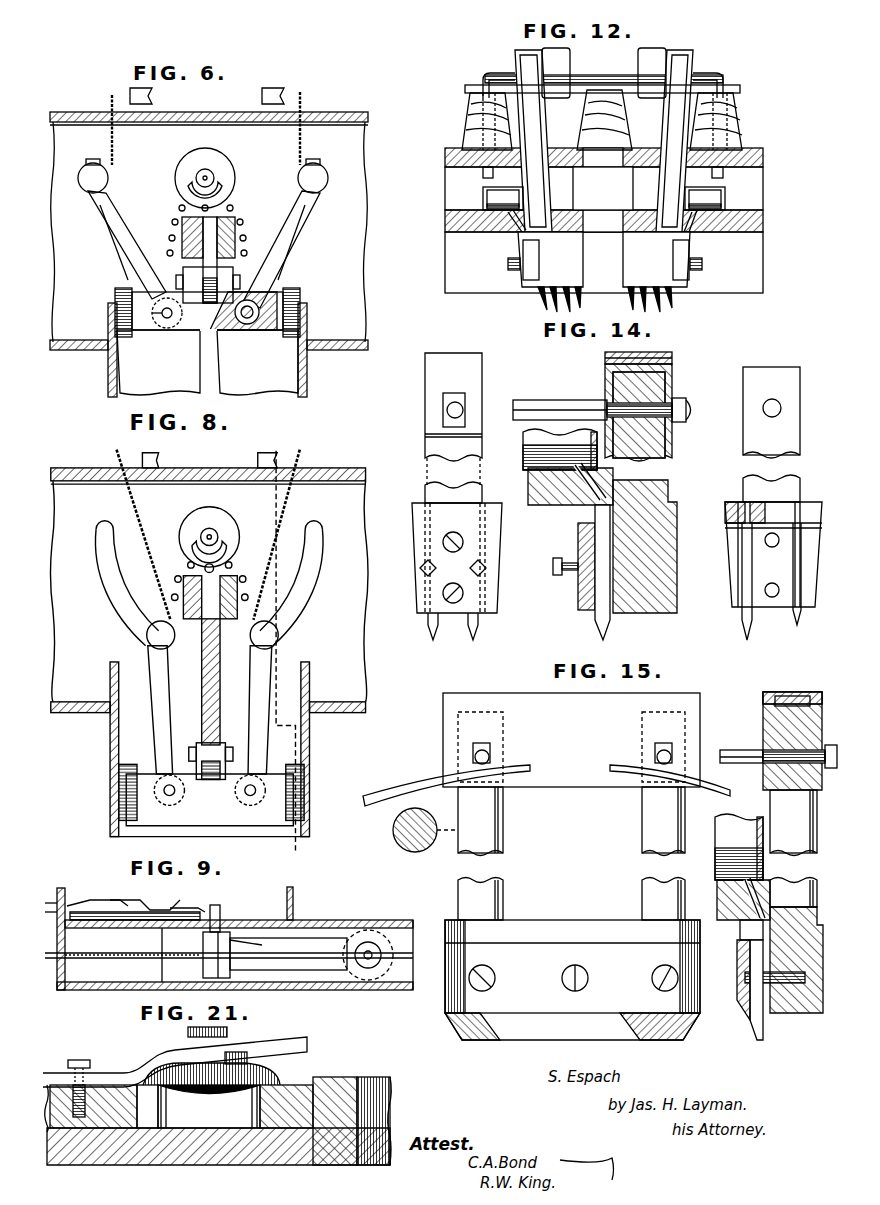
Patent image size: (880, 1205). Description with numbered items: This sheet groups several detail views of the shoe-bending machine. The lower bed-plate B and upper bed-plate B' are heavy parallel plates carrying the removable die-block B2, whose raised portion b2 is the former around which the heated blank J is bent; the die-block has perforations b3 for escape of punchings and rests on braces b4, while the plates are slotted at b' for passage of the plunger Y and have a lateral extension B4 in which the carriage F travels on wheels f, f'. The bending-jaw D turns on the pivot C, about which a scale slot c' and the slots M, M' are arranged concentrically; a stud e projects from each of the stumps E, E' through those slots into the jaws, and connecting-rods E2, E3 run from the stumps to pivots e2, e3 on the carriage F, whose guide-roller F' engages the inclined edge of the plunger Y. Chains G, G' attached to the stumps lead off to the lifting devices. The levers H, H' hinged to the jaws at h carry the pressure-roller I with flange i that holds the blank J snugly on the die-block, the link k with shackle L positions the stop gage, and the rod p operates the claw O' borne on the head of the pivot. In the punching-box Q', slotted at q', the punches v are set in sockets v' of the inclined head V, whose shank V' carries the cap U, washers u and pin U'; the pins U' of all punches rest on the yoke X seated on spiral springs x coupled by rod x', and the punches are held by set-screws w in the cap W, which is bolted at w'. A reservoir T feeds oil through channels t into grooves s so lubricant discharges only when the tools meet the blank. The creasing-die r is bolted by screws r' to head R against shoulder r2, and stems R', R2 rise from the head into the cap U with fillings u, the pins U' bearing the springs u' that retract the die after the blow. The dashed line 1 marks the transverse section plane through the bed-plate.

In FIG. 6, the upper bed-plate B' is at (218, 231).
In FIG. 8, the upper bed-plate B' is at (204, 583).
In FIG. 9, the upper bed-plate B' is at (265, 903).
In FIG. 21, the upper bed-plate B' is at (217, 1135).
In FIG. 9, the lower bed-plate B is at (240, 945).
In FIG. 21, the die-block B2 is at (352, 1132).
In FIG. 6, the lateral extension B4 is at (207, 350).
In FIG. 8, the lateral extension B4 is at (209, 749).
In FIG. 6, the slot in upper bed-plate b' is at (208, 350).
In FIG. 21, the die or former b2 is at (373, 1060).
In FIG. 6, the perforations b3 is at (202, 230).
In FIG. 8, the perforations b3 is at (216, 578).
In FIG. 6, the braces b4 is at (237, 220).
In FIG. 8, the braces b4 is at (212, 615).
In FIG. 9, the braces b4 is at (180, 944).
In FIG. 6, the pivot C is at (205, 178).
In FIG. 8, the pivot C is at (209, 537).
In FIG. 6, the slot concentric with pivot c' is at (217, 171).
In FIG. 8, the slot concentric with pivot c' is at (199, 535).
In FIG. 6, the movable stump E is at (313, 176).
In FIG. 8, the movable stump E is at (270, 635).
In FIG. 9, the movable stump E is at (216, 955).
In FIG. 6, the movable stump E' is at (93, 176).
In FIG. 8, the movable stump E' is at (161, 635).
In FIG. 6, the connecting-rod E2 is at (282, 249).
In FIG. 8, the connecting-rod E2 is at (266, 710).
In FIG. 9, the connecting-rod E2 is at (288, 954).
In FIG. 6, the connecting-rod E3 is at (127, 245).
In FIG. 8, the connecting-rod E3 is at (153, 710).
In FIG. 9, the stud e is at (214, 909).
In FIG. 8, the pivot of connecting-rod e2 is at (259, 790).
In FIG. 6, the pivot of connecting-rod e3 is at (207, 311).
In FIG. 8, the pivot of connecting-rod e3 is at (162, 790).
In FIG. 6, the carriage F is at (243, 320).
In FIG. 8, the carriage F is at (207, 792).
In FIG. 9, the carriage F is at (343, 988).
In FIG. 6, the guide-roller F' is at (214, 260).
In FIG. 8, the guide-roller F' is at (216, 742).
In FIG. 6, the carriage wheel f is at (298, 308).
In FIG. 8, the carriage wheel f is at (307, 792).
In FIG. 9, the carriage wheel f is at (368, 955).
In FIG. 6, the carriage wheel f' is at (116, 308).
In FIG. 8, the carriage wheel f' is at (107, 792).
In FIG. 6, the chain or wire-rope G is at (309, 125).
In FIG. 8, the chain or wire-rope G is at (208, 535).
In FIG. 9, the chain or wire-rope G is at (229, 947).
In FIG. 6, the chain or wire-rope G' is at (104, 127).
In FIG. 6, the lever H is at (265, 94).
In FIG. 9, the lever H is at (49, 922).
In FIG. 6, the lever H' is at (153, 94).
In FIG. 6, the slot M is at (303, 242).
In FIG. 8, the slot M is at (304, 583).
In FIG. 9, the slot M is at (254, 936).
In FIG. 6, the slot M' is at (103, 242).
In FIG. 8, the slot M' is at (118, 583).
In FIG. 8, the plunger Y is at (201, 682).
In FIG. 8, the line 1 1 is at (286, 651).
In FIG. 9, the rod p is at (97, 893).
In FIG. 9, the clamp or claw O' is at (135, 901).
In FIG. 9, the shackle L is at (187, 898).
In FIG. 9, the bending-jaw D is at (234, 898).
In FIG. 21, the bending-jaw D is at (147, 1106).
In FIG. 21, the hinge of lever h is at (93, 1085).
In FIG. 21, the link k is at (181, 1057).
In FIG. 21, the flange of pressure-roller i is at (211, 1074).
In FIG. 21, the pressure-roller I is at (209, 1106).
In FIG. 21, the blank J is at (286, 1096).
In FIG. 12, the punching-box Q' is at (615, 220).
In FIG. 12, the transverse slot of punching-box q' is at (603, 199).
In FIG. 12, the cap U is at (604, 140).
In FIG. 14, the cap U is at (548, 406).
In FIG. 15, the cap U is at (639, 741).
In FIG. 12, the outwardly-projecting pin U' is at (607, 68).
In FIG. 14, the outwardly-projecting pin U' is at (551, 400).
In FIG. 15, the outwardly-projecting pin U' is at (647, 752).
In FIG. 14, the washers or fillings u is at (655, 361).
In FIG. 15, the washers or fillings u is at (792, 682).
In FIG. 15, the spring u' is at (546, 785).
In FIG. 12, the yoke X is at (601, 89).
In FIG. 12, the spiral spring x is at (603, 120).
In FIG. 12, the rod x' is at (604, 69).
In FIG. 12, the reservoir T is at (590, 188).
In FIG. 14, the reservoir T is at (550, 449).
In FIG. 15, the reservoir T is at (739, 847).
In FIG. 12, the channel t is at (508, 222).
In FIG. 14, the channel t is at (585, 488).
In FIG. 15, the channel t is at (746, 908).
In FIG. 12, the head of punches V is at (604, 259).
In FIG. 14, the head of punches V is at (617, 546).
In FIG. 12, the shank V' is at (560, 189).
In FIG. 14, the shank V' is at (612, 435).
In FIG. 12, the punch v is at (600, 301).
In FIG. 14, the punch v is at (614, 581).
In FIG. 12, the socket v' is at (651, 125).
In FIG. 12, the retaining-cap W is at (510, 275).
In FIG. 14, the retaining-cap W is at (523, 566).
In FIG. 12, the set-screw w is at (704, 265).
In FIG. 14, the set-screw w is at (499, 554).
In FIG. 14, the bolts w' is at (485, 599).
In FIG. 14, the oil-groove s is at (596, 615).
In FIG. 15, the oil-groove s is at (759, 991).
In FIG. 15, the head R is at (641, 972).
In FIG. 15, the stem R' is at (436, 853).
In FIG. 15, the stem R2 is at (729, 853).
In FIG. 15, the creasing-die r is at (647, 1028).
In FIG. 15, the bolts or screws r' is at (637, 978).
In FIG. 15, the ledge or shoulder r2 is at (742, 940).